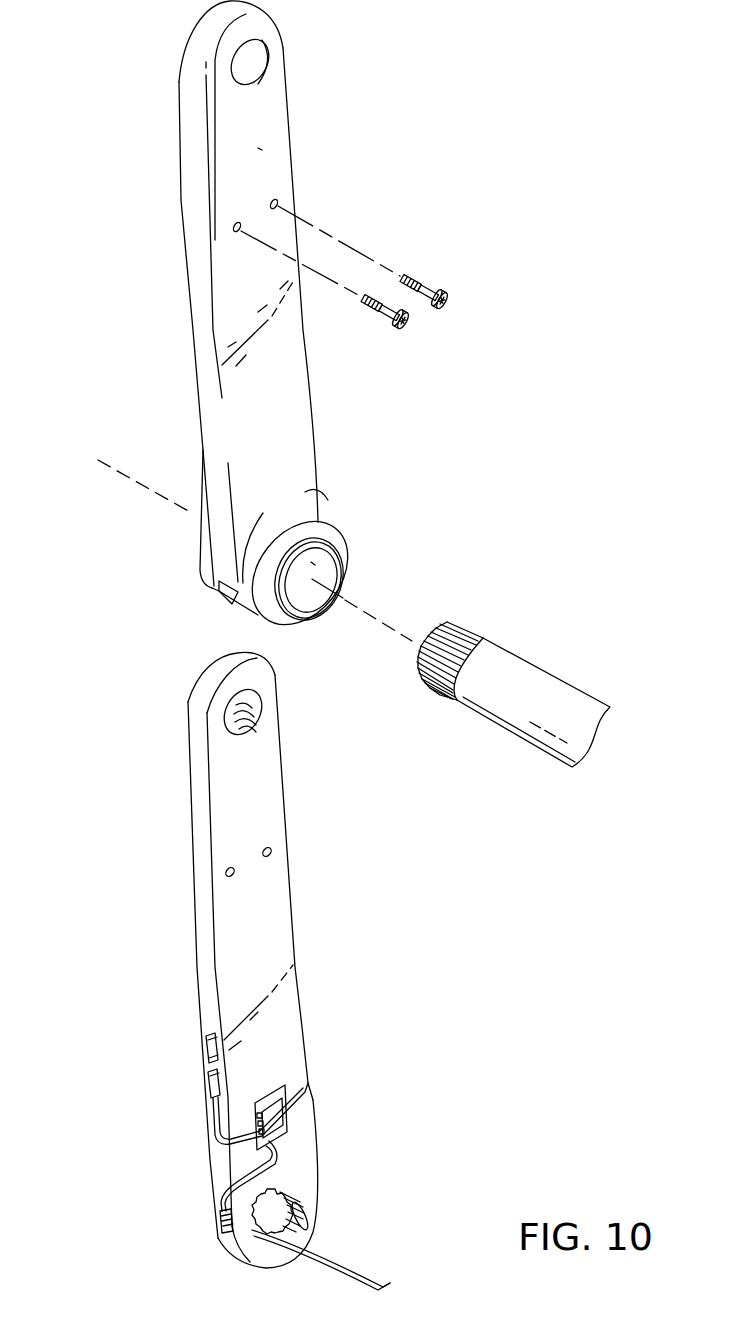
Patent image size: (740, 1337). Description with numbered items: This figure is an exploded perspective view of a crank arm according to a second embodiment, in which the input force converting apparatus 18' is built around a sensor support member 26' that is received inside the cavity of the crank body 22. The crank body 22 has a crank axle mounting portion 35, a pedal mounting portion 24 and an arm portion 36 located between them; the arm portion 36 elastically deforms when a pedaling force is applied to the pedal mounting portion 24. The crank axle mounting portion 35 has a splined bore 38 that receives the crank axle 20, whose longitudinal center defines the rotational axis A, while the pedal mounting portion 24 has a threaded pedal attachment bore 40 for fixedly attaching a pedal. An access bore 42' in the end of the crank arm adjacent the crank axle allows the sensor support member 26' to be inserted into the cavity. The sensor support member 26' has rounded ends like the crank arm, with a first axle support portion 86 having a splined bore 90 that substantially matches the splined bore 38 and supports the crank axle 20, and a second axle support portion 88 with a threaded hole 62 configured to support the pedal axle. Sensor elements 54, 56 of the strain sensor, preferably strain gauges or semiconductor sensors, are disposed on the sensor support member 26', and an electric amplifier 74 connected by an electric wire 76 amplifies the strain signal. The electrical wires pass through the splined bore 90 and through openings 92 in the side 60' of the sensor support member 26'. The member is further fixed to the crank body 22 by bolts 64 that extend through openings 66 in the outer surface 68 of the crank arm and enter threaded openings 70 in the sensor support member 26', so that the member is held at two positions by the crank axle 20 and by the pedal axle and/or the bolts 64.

The input force converting apparatus 18' is at (285, 971).
The crank axle 20 is at (547, 674).
The crank body 22 is at (249, 329).
The pedal mounting portion 24 is at (179, 78).
The sensor support member 26' is at (255, 960).
The crank axle mounting portion 35 is at (198, 578).
The arm portion 36 is at (188, 265).
The splined bore 38 is at (317, 612).
The threaded pedal attachment bore 40 is at (268, 68).
The access bore 42' is at (201, 604).
The sensor element 54 is at (211, 1086).
The sensor element 56 is at (207, 1048).
The side of the strain support member 60' is at (191, 987).
The threaded hole 62 is at (258, 712).
The bolt 64 is at (440, 308).
The openings 66 is at (268, 201).
The outer surface 68 is at (258, 148).
The threaded openings 70 is at (236, 878).
The electric amplifier 74 is at (277, 1123).
The electric wire 76 is at (372, 1283).
The first axle support portion 86 is at (302, 1180).
The second axle support portion 88 is at (188, 718).
The splined bore 90 is at (300, 1221).
The openings 92 is at (221, 1232).
The rotational axis A is at (113, 472).